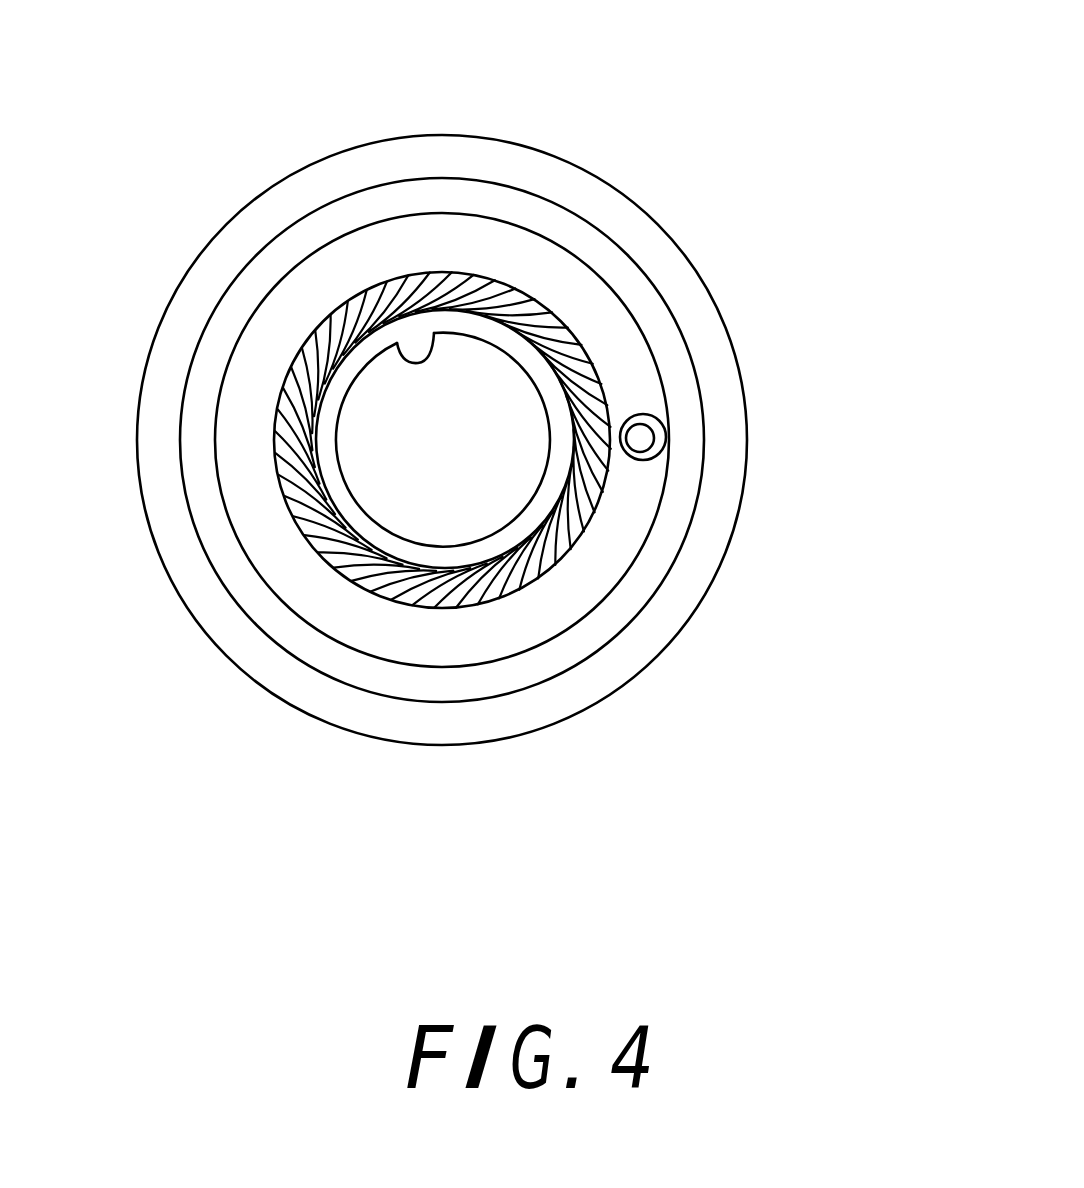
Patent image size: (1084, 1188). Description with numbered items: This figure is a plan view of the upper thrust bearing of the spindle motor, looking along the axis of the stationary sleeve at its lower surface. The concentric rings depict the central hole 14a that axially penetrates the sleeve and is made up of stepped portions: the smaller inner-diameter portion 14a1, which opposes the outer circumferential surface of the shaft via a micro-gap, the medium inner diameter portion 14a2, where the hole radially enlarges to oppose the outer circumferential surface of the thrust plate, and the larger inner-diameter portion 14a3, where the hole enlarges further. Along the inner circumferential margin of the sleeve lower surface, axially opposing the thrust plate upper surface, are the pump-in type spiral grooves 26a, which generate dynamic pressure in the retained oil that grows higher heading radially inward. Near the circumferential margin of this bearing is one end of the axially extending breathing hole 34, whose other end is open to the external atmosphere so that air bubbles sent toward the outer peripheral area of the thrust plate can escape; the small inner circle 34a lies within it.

The central hole 14a is at (360, 130).
The smaller inner-diameter portion 14a1 is at (435, 338).
The medium inner diameter portion 14a2 is at (648, 343).
The larger inner-diameter portion 14a3 is at (655, 286).
The pump-in type spiral grooves 26a is at (503, 297).
The breathing hole 34 is at (654, 416).
The tube bore 34a is at (657, 443).